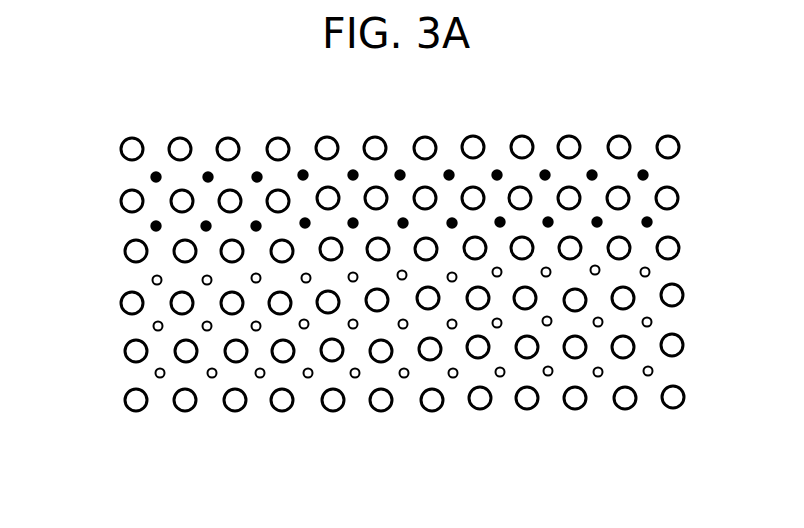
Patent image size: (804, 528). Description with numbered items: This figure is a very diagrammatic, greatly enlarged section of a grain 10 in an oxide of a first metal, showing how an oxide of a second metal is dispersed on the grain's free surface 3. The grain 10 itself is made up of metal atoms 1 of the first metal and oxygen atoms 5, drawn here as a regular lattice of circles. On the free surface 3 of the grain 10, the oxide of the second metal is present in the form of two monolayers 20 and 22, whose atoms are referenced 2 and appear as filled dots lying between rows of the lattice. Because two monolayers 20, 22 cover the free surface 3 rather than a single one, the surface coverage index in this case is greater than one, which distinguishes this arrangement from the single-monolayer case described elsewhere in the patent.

The metal atoms 1 is at (254, 282).
The atoms of the second metal M2 2 is at (258, 222).
The free surface 3 is at (140, 132).
The oxygen atoms 5 is at (380, 247).
The grain 10 is at (114, 281).
The first monolayer 20 is at (128, 177).
The second monolayer 22 is at (128, 225).